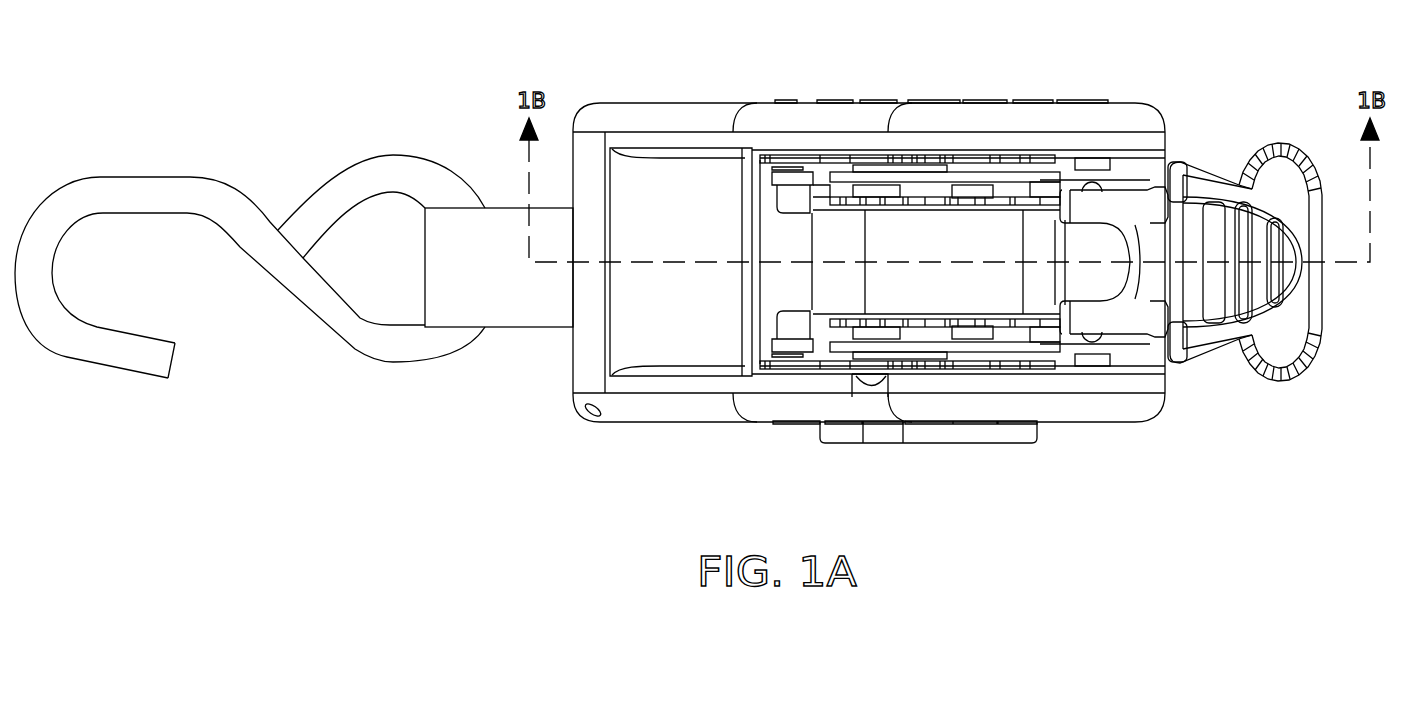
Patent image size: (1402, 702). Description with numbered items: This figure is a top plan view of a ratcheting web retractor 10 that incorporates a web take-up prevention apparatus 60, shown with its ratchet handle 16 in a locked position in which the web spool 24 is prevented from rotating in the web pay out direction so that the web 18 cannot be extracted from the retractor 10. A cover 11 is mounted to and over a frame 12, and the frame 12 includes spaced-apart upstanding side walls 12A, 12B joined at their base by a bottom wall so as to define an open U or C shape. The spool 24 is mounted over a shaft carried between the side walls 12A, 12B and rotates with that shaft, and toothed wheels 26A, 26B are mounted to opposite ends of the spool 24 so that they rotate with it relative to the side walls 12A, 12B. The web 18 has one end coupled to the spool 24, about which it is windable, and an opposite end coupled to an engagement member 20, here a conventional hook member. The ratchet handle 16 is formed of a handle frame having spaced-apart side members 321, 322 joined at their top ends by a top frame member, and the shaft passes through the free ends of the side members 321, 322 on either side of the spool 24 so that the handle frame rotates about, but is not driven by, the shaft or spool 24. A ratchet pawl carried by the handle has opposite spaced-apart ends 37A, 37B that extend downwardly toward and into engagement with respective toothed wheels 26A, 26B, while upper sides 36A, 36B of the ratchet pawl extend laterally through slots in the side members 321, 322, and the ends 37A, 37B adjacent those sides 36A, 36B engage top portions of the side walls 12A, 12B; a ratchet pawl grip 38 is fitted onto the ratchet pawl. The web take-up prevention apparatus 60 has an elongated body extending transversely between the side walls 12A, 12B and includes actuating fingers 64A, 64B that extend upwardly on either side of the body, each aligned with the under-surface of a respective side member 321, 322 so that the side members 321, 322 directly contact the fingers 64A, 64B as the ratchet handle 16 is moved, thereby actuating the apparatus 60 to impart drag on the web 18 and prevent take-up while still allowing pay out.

The web retractor 10 is at (537, 470).
The cover 11 is at (940, 118).
The frame 12 is at (1060, 146).
The side wall 12A is at (880, 157).
The side wall 12B is at (962, 367).
The ratchet handle 16 is at (1293, 146).
The web 18 is at (523, 332).
The engagement member 20 is at (290, 302).
The web spool 24 is at (970, 192).
The toothed wheel 26A is at (893, 204).
The toothed wheel 26B is at (972, 332).
The side member 321 is at (1118, 208).
The side member 322 is at (1105, 350).
The upper side of ratchet pawl 36A is at (1095, 165).
The upper side of ratchet pawl 36B is at (1088, 363).
The end of ratchet pawl 37A is at (1043, 187).
The end of ratchet pawl 37B is at (1038, 343).
The ratchet pawl grip 38 is at (1157, 152).
The web take-up prevention apparatus 60 is at (830, 190).
The actuating finger 64A is at (793, 198).
The actuating finger 64B is at (792, 326).